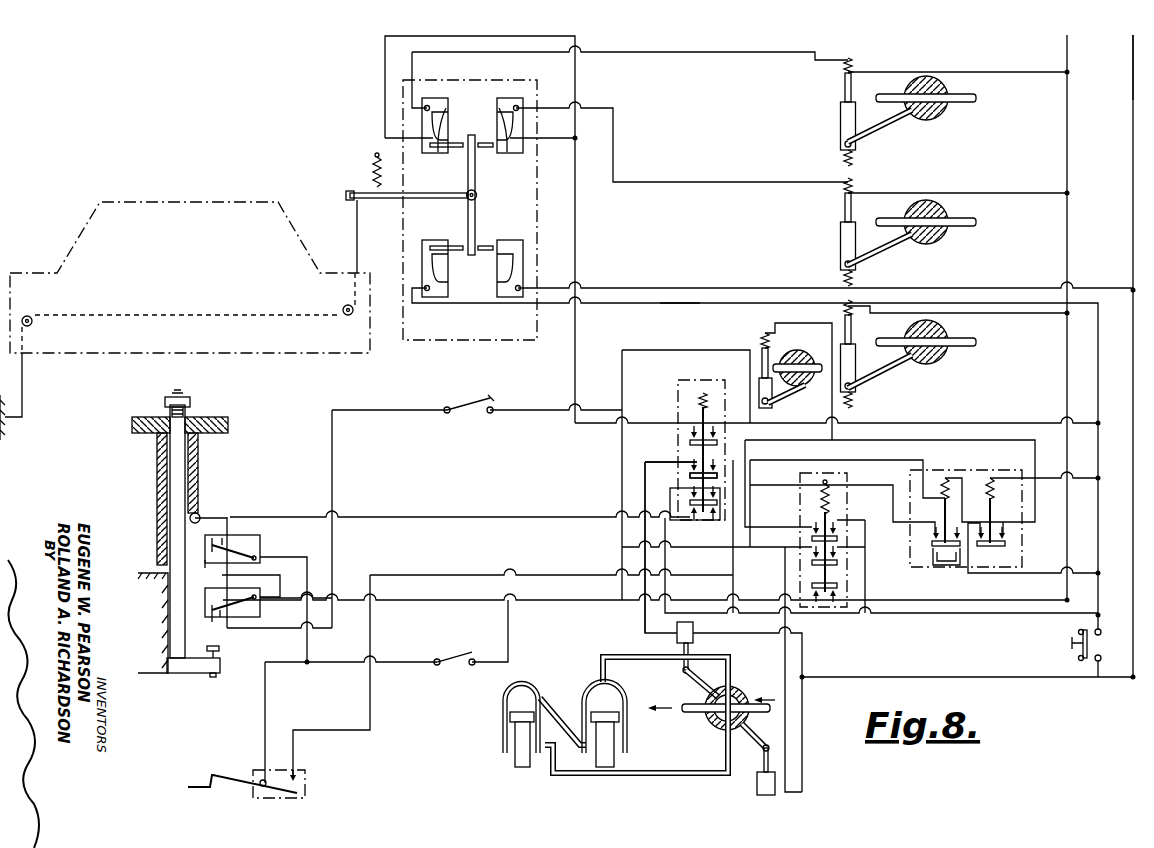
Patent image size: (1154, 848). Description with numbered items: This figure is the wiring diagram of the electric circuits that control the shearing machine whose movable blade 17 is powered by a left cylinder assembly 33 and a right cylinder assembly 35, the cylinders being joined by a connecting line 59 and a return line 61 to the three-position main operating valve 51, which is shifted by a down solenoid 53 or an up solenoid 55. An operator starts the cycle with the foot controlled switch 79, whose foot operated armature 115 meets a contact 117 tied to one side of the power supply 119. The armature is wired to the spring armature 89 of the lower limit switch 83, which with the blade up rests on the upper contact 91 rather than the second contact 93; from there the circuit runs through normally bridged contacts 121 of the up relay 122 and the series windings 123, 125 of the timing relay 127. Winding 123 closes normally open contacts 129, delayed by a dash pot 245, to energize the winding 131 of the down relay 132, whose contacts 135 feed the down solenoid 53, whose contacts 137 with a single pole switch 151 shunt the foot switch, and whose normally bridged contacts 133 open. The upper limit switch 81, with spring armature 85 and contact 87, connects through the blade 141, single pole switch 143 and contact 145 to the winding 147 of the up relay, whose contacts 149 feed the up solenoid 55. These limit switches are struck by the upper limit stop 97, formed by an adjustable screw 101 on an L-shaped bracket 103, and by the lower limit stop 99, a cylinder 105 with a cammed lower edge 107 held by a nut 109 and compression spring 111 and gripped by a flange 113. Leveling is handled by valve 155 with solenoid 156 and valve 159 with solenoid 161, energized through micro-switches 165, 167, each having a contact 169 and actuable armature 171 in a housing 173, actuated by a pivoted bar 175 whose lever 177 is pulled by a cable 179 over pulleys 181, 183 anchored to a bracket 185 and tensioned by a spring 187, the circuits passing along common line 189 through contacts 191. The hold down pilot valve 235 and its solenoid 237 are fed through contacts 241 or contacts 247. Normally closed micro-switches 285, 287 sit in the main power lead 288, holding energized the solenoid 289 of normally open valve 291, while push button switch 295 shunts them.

The movable blade 17 is at (190, 277).
The left cylinder assembly 33 is at (615, 724).
The right cylinder assembly 35 is at (508, 725).
The main operating valve 51 is at (716, 730).
The down solenoid 53 is at (757, 788).
The up solenoid 55 is at (677, 642).
The connecting line 59 is at (552, 710).
The line 61 is at (645, 778).
The foot controlled switch 79 is at (262, 786).
The upper limit switch 81 is at (245, 605).
The lower limit switch 83 is at (249, 549).
The spring armature 85 is at (232, 604).
The contact 87 is at (226, 614).
The spring armature 89 is at (240, 548).
The upper contact 91 is at (226, 545).
The second contact 93 is at (222, 556).
The upper limit stop 97 is at (193, 677).
The lower limit stop 99 is at (156, 531).
The adjustable screw 101 is at (219, 651).
The L-shaped bracket 103 is at (166, 672).
The cylinder 105 is at (157, 511).
The lower edge 107 is at (203, 516).
The nut 109 is at (174, 395).
The compression spring 111 is at (185, 411).
The flange 113 is at (145, 417).
The foot operated armature 115 is at (228, 778).
The contact 117 is at (298, 778).
The power supply 119 is at (1133, 98).
The normally bridged contacts 121 is at (703, 514).
The up relay 122 is at (671, 547).
The winding 123 is at (946, 478).
The winding 125 is at (991, 478).
The timing relay 127 is at (966, 518).
The normally open contacts 129 is at (932, 536).
The winding 131 is at (830, 500).
The down relay 132 is at (807, 540).
The normally bridged contacts 133 is at (822, 592).
The normally open contacts 135 is at (812, 562).
The normally open contacts 137 is at (812, 540).
The blade 141 is at (470, 396).
The single pole switch 143 is at (464, 424).
The contact 145 is at (494, 413).
The winding 147 is at (700, 394).
The normally open contacts 149 is at (692, 473).
The single pole switch 151 is at (454, 671).
The normally closed valve 155 is at (933, 242).
The solenoid 156 is at (840, 198).
The second normally closed valve 159 is at (935, 118).
The solenoid 161 is at (840, 68).
The micro-switch 165 is at (513, 105).
The micro-switch 167 is at (437, 105).
The contact 169 is at (472, 158).
The actuable armature 171 is at (500, 118).
The housing 173 is at (403, 247).
The bar 175 is at (478, 216).
The lever 177 is at (410, 200).
The cable 179 is at (357, 227).
The pulley 181 is at (348, 318).
The pulley 183 is at (31, 326).
The bracket 185 is at (16, 422).
The spring 187 is at (374, 175).
The common line 189 is at (470, 199).
The normally open contacts 191 is at (716, 436).
The hold down pilot valve 235 is at (795, 366).
The solenoid 237 is at (762, 335).
The normally open contacts 241 is at (1005, 544).
The dash pot 245 is at (936, 566).
The normally open contacts 247 is at (717, 495).
The micro-switch 285 is at (508, 262).
The micro-switch 287 is at (438, 262).
The main power lead 288 is at (672, 304).
The solenoid 289 is at (840, 312).
The normally open valve 291 is at (937, 360).
The push button switch 295 is at (1072, 650).